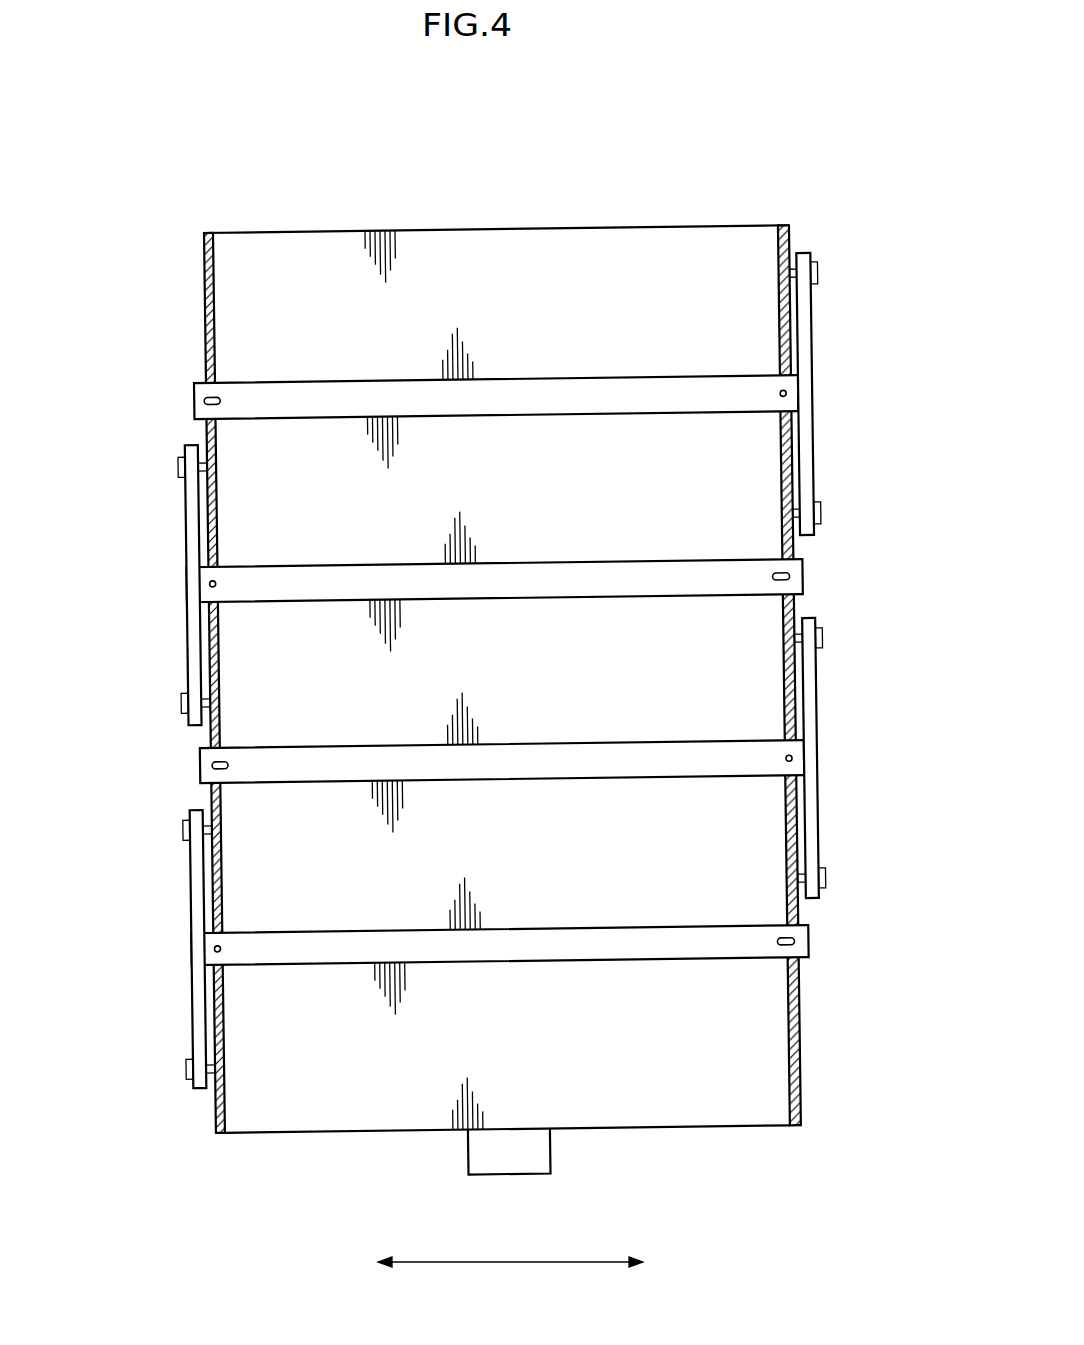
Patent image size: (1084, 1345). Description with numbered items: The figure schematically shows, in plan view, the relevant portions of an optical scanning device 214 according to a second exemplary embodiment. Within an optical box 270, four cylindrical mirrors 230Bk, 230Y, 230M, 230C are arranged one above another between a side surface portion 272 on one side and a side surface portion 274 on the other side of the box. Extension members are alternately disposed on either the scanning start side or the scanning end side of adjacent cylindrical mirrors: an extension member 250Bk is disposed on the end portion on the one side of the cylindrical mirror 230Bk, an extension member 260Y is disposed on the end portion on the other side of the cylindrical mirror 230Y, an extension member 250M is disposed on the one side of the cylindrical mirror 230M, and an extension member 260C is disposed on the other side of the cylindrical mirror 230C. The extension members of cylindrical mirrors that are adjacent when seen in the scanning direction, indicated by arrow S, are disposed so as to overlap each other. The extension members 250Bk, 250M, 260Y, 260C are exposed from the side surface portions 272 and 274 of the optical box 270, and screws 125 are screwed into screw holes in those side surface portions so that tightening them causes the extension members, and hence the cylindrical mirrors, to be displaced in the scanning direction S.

The optical scanning device 214 is at (477, 157).
The optical box 270 is at (522, 220).
The side surface portion 272 is at (205, 239).
The side surface portion 274 is at (791, 232).
The screw 125 is at (818, 274).
The cylindrical mirror 230Bk is at (522, 372).
The cylindrical mirror 230Y is at (523, 553).
The cylindrical mirror 230M is at (525, 735).
The cylindrical mirror 230C is at (528, 915).
The extension member 250Bk is at (812, 397).
The extension member 250M is at (818, 760).
The extension member 260Y is at (184, 589).
The extension member 260C is at (190, 951).
The scanning direction S is at (512, 1264).